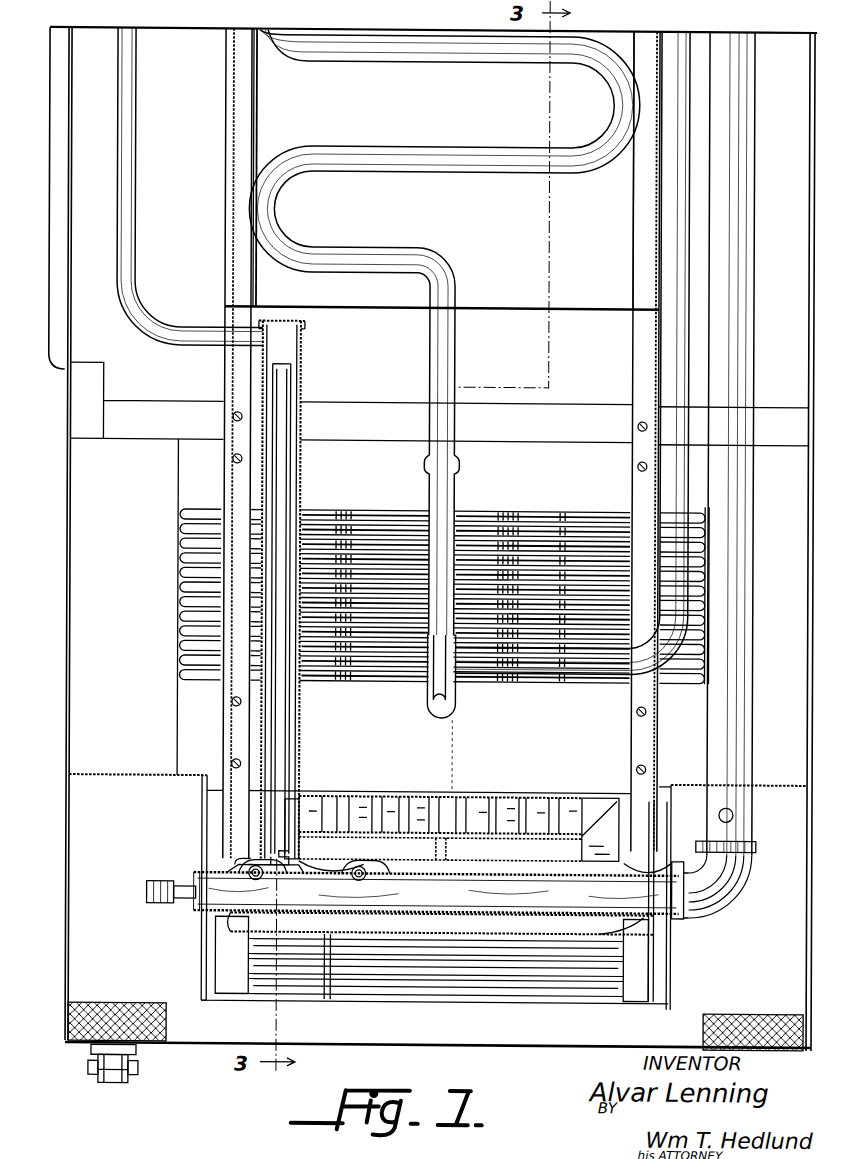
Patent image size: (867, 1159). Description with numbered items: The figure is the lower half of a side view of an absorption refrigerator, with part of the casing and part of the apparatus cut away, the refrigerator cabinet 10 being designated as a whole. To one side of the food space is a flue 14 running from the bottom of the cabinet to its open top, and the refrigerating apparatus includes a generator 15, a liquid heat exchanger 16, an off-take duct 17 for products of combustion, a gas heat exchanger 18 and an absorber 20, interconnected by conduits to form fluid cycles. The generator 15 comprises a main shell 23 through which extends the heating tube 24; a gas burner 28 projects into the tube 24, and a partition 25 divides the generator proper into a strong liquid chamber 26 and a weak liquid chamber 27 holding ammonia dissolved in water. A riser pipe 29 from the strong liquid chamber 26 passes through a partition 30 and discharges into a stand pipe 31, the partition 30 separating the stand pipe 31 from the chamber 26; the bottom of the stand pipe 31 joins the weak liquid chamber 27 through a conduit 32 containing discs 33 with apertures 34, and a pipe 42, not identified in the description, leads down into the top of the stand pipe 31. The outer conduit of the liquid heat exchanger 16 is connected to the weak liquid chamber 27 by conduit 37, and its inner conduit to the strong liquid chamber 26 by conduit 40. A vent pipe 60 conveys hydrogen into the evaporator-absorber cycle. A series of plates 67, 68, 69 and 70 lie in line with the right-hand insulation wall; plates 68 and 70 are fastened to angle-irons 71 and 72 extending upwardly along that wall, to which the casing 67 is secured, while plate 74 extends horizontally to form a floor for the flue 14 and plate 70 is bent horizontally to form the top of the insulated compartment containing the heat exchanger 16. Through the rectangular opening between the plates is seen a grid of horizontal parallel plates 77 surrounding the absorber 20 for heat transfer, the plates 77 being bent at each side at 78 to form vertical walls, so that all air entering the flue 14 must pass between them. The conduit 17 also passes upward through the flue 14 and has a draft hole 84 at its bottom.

The refrigerator cabinet 10 is at (66, 1000).
The flue 14 is at (443, 197).
The generator 15 is at (240, 932).
The liquid heat exchanger 16 is at (562, 985).
The off-take duct for products of combustion 17 is at (735, 268).
The gas heat exchanger 18 is at (490, 160).
The absorber 20 is at (395, 545).
The main shell 23 is at (580, 918).
The heating tube 24 is at (436, 893).
The partition 25 is at (328, 960).
The strong liquid chamber 26 is at (250, 922).
The weak liquid chamber 27 is at (610, 935).
The gas burner 28 is at (190, 893).
The riser pipe 29 is at (285, 688).
The partition 30 is at (274, 860).
The stand pipe 31 is at (302, 470).
The conduit 32 is at (560, 800).
The discs 33 is at (410, 815).
The apertures 34 is at (318, 798).
The conduit 37 is at (357, 869).
The conduit 40 is at (245, 862).
The pipe 42 is at (152, 330).
The vent pipe 60 is at (690, 378).
The plate 67 is at (142, 606).
The plate 68 is at (466, 444).
The plate 69 is at (733, 521).
The plate 70 is at (485, 753).
The angle-iron 71 is at (226, 470).
The angle-iron 72 is at (638, 485).
The plate 74 is at (108, 778).
The parallel plates 77 is at (615, 556).
The bent portions 78 is at (707, 598).
The draft hole 84 is at (733, 816).